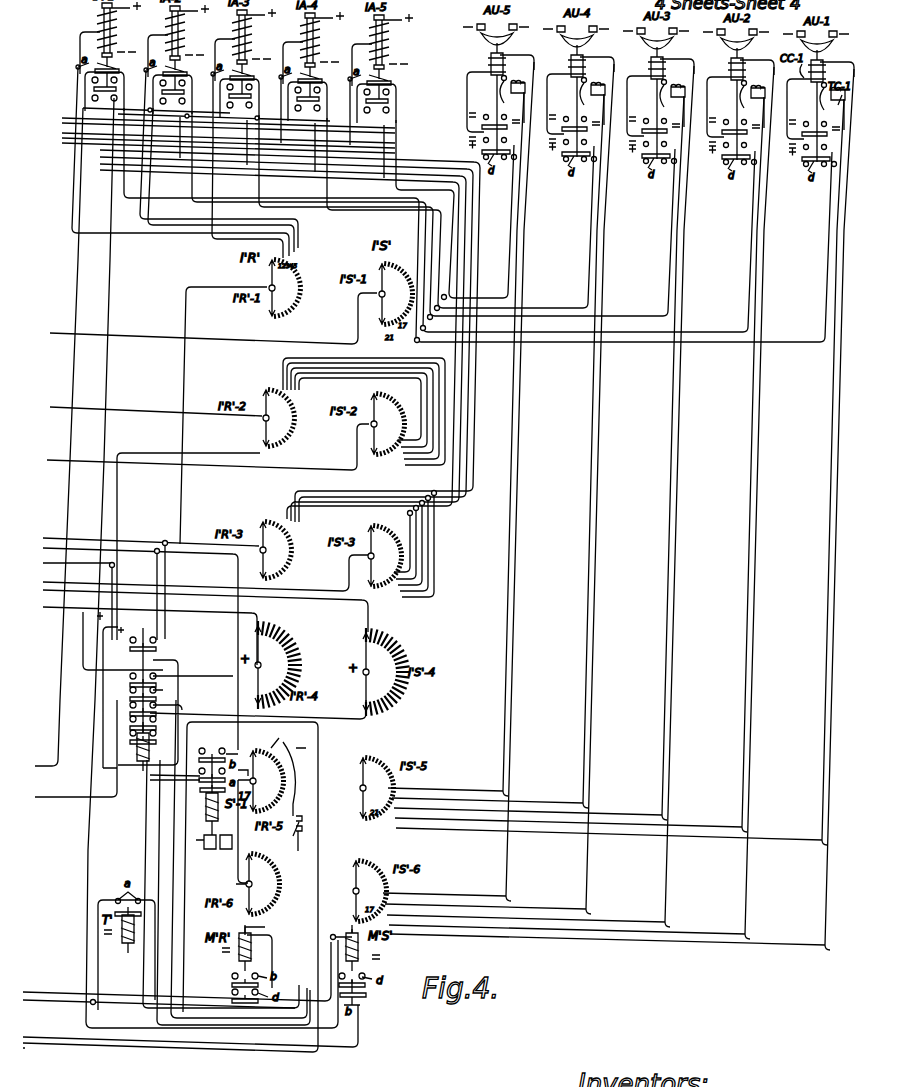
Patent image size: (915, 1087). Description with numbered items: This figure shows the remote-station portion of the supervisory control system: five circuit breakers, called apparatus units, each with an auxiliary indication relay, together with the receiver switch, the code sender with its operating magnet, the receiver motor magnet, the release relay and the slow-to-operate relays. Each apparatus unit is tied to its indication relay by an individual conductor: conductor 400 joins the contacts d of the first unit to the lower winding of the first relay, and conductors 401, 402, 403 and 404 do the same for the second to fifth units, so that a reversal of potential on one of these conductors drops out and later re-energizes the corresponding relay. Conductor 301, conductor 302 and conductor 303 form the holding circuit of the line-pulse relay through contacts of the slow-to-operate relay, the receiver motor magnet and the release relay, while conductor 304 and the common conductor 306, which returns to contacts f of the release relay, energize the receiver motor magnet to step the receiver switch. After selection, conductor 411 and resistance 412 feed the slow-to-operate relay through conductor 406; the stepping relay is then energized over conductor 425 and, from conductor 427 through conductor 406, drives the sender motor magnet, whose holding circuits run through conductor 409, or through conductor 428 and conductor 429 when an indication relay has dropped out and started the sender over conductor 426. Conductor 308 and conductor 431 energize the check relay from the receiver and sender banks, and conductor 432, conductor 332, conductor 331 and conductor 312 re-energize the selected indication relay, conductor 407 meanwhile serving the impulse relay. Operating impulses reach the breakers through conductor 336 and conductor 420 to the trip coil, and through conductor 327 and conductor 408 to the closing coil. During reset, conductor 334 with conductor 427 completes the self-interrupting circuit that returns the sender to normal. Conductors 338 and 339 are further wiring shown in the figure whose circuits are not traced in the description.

The conductor 429 is at (64, 142).
The conductor 426 is at (78, 186).
The conductor 425 is at (113, 281).
The conductor 432 is at (202, 216).
The conductor 428 is at (241, 160).
The conductor 400 is at (160, 200).
The conductor 401 is at (228, 201).
The conductor 402 is at (298, 203).
The conductor 403 is at (368, 199).
The conductor 404 is at (412, 197).
The conductor 420 is at (625, 840).
The conductor 408 is at (590, 941).
The conductor 431 is at (332, 380).
The conductor 312 is at (92, 335).
The conductor 332 is at (222, 290).
The conductor 308 is at (90, 410).
The conductor 407 is at (88, 463).
The conductor 306 is at (116, 491).
The conductor 409 is at (80, 538).
The conductor 301 is at (88, 548).
The conductor 338 is at (132, 586).
The conductor 331 is at (54, 612).
The conductor 339 is at (260, 612).
The conductor 427 is at (348, 648).
The conductor 411 is at (296, 795).
The resistance 412 is at (294, 834).
The conductor 334 is at (314, 762).
The conductor 327 is at (55, 1048).
The conductor 303 is at (176, 864).
The conductor 302 is at (188, 876).
The conductor 304 is at (48, 993).
The conductor 406 is at (44, 999).
The conductor 336 is at (64, 1041).